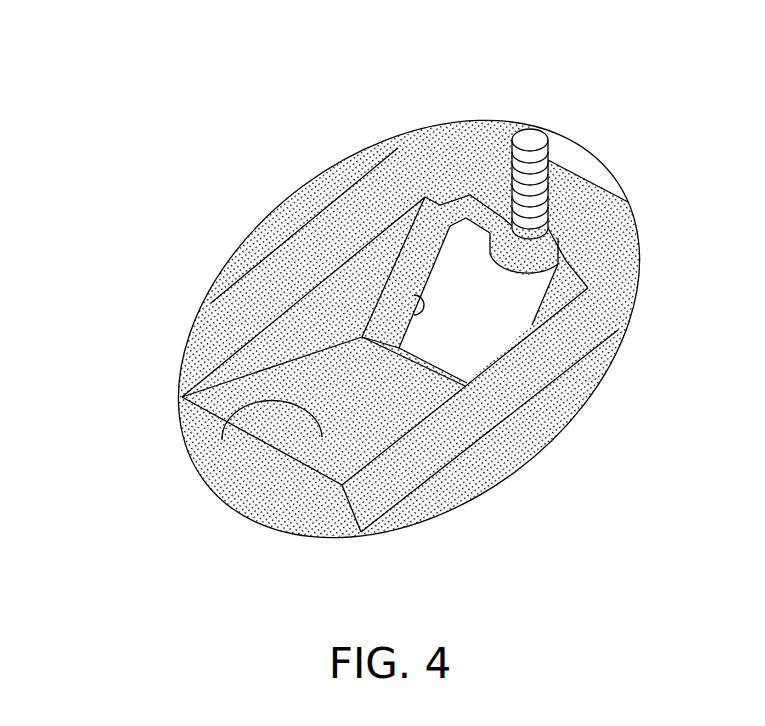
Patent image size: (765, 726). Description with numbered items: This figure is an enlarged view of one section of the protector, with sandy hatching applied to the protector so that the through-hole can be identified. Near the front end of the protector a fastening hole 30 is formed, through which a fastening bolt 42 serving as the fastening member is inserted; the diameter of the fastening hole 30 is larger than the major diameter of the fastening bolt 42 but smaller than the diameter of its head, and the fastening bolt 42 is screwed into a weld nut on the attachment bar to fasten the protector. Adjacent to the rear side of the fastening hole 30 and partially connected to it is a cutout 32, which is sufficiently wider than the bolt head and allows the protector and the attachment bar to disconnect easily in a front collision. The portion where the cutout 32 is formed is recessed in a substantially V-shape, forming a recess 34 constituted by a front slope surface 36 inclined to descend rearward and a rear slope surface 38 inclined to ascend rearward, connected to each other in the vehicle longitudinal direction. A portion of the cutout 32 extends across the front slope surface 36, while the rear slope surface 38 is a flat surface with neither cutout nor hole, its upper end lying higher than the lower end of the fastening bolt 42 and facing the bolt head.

The fastening hole 30 is at (512, 150).
The cutout 32 is at (413, 316).
The recess 34 is at (241, 283).
The front slope surface 36 is at (410, 207).
The rear slope surface 38 is at (240, 418).
The fastening bolt 42 is at (529, 138).